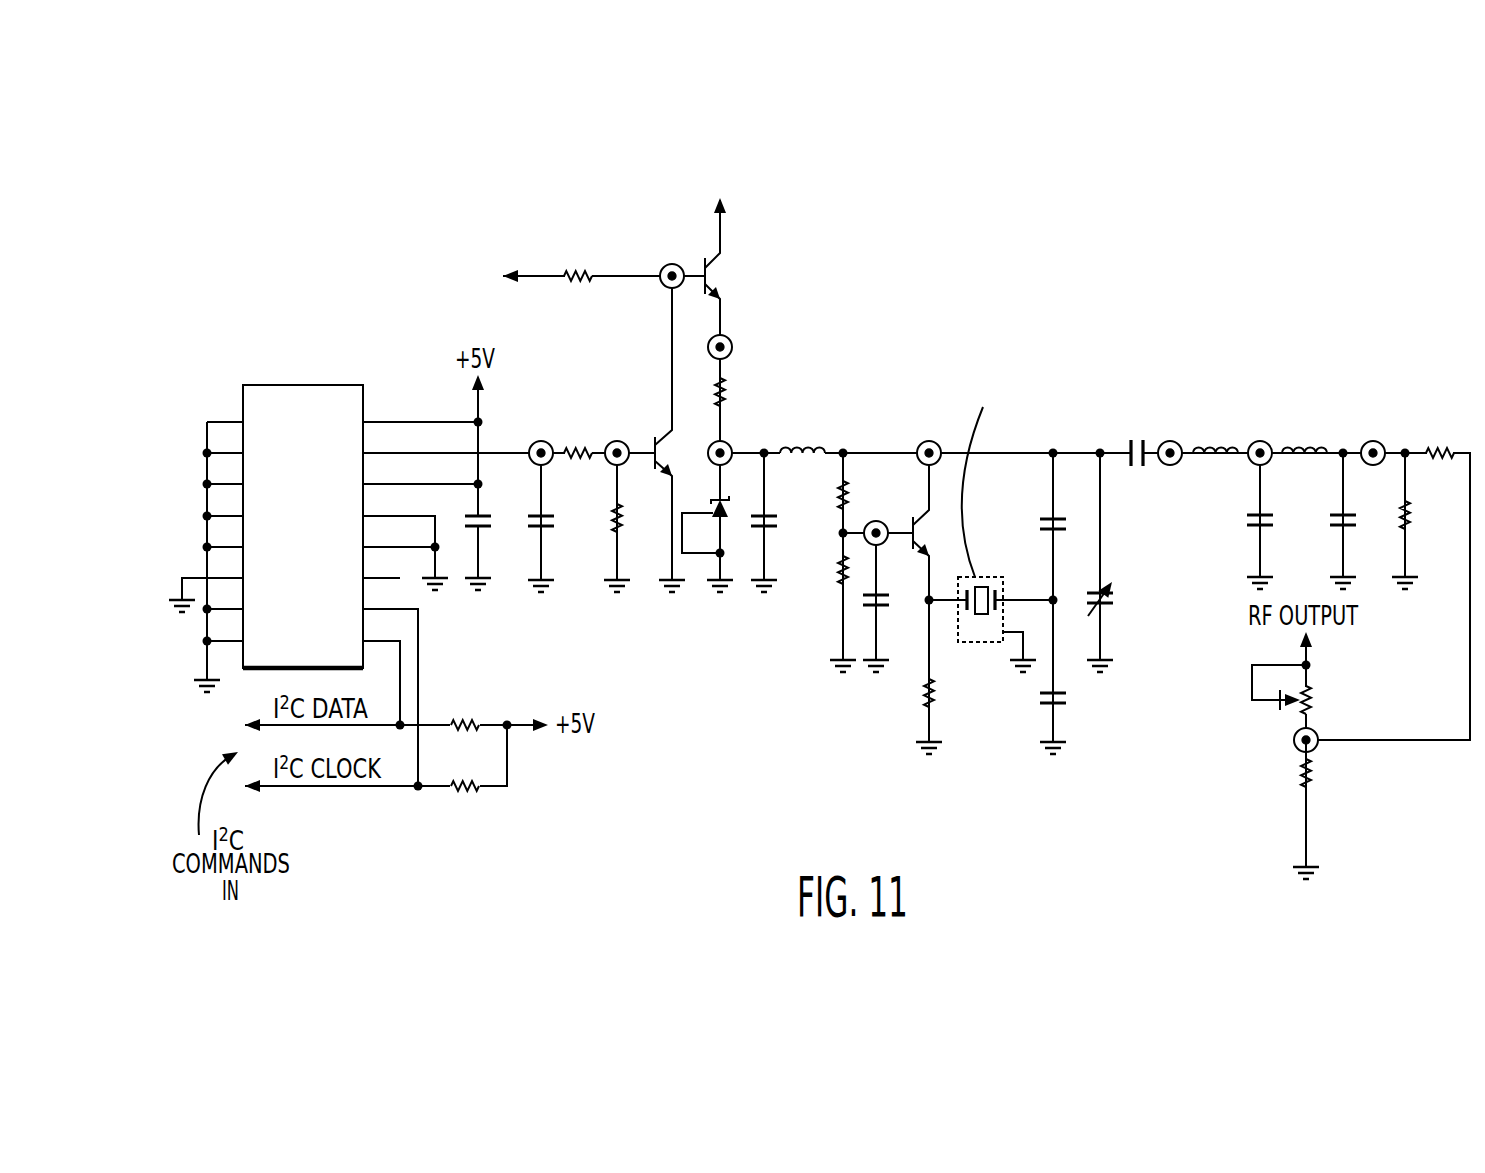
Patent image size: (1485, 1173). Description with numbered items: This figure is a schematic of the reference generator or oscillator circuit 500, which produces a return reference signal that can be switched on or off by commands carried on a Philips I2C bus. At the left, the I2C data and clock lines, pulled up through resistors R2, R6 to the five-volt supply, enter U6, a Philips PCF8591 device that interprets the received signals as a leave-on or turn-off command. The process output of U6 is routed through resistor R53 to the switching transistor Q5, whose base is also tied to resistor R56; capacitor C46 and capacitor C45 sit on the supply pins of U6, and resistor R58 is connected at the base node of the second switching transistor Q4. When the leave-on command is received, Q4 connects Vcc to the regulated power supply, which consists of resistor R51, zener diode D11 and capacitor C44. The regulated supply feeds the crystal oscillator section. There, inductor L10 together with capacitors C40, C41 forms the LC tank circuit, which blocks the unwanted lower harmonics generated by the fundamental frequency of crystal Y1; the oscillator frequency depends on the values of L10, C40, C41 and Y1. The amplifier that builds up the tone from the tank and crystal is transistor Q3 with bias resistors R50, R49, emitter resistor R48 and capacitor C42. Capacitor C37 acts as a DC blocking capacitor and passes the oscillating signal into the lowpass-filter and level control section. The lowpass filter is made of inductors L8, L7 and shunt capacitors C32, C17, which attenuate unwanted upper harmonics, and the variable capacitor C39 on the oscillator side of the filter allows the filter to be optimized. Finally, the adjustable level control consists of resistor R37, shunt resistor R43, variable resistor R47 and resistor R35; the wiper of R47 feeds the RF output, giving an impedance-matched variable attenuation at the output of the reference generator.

The element U6 is at (355, 588).
The capacitor C46 is at (491, 534).
The capacitor C45 is at (530, 516).
The resistor R53 is at (580, 435).
The resistor R56 is at (600, 516).
The switching transistor Q5 is at (665, 434).
The resistor R58 is at (604, 264).
The switching transistor Q4 is at (716, 257).
The resistor R51 is at (737, 417).
The zener diode D11 is at (707, 544).
The capacitor C44 is at (779, 521).
The inductor L10 is at (802, 433).
The resistor R50 is at (863, 493).
The resistor R49 is at (825, 602).
The capacitor C42 is at (890, 596).
The transistor Q3 is at (924, 520).
The resistor R48 is at (911, 675).
The crystal Y1 is at (989, 513).
The capacitor C40 is at (1031, 527).
The capacitor C41 is at (1031, 677).
The variable capacitor C39 is at (1121, 561).
The capacitor C37 is at (1137, 434).
The inductor L8 is at (1215, 432).
The capacitor C32 is at (1245, 515).
The inductor L7 is at (1304, 432).
The capacitor C17 is at (1328, 519).
The resistor R43 is at (1389, 519).
The resistor R37 is at (1437, 435).
The variable resistor R47 is at (1304, 701).
The resistor R35 is at (1324, 803).
The resistor R2 is at (396, 709).
The resistor R6 is at (376, 758).
The reference generator or oscillator circuit 500 is at (514, 829).